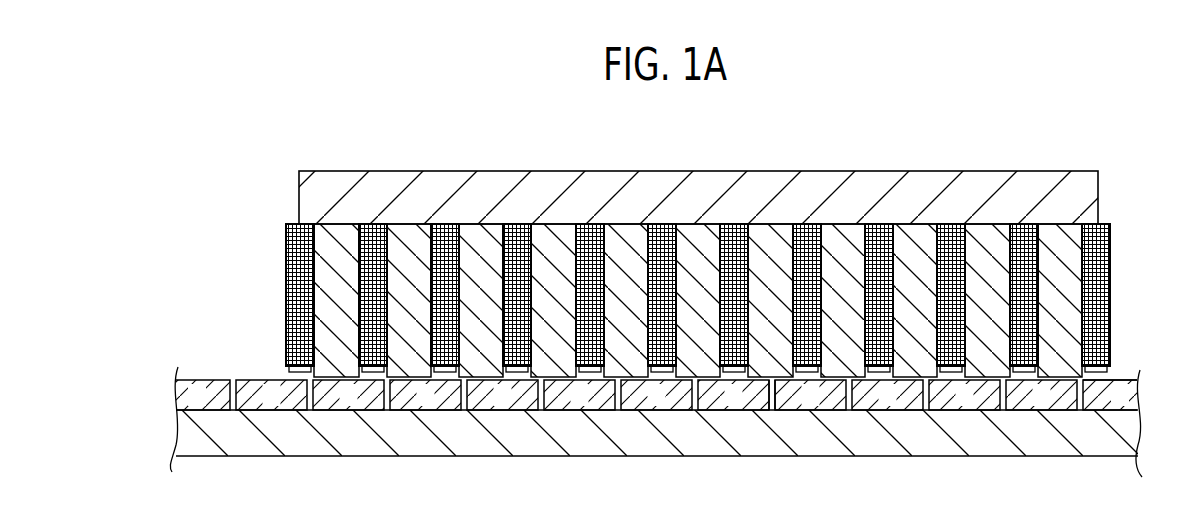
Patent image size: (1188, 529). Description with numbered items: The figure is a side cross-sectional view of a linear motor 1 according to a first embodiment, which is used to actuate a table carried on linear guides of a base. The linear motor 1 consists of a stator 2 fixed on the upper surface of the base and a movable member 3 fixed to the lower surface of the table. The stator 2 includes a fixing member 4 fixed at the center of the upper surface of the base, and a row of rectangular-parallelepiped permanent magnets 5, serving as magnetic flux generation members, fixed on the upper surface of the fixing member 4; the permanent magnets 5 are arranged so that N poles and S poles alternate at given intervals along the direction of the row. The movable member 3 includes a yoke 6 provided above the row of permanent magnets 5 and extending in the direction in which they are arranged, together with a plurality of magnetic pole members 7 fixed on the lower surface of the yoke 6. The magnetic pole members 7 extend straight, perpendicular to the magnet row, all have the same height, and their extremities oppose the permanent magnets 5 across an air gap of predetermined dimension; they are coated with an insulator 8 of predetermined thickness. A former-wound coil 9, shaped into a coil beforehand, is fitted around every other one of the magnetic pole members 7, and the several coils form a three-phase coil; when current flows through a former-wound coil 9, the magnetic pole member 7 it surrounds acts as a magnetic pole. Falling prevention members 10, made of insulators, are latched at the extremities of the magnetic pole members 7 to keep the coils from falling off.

The linear motor 1 is at (698, 230).
The stator 2 is at (674, 413).
The movable member 3 is at (698, 239).
The fixing member 4 is at (387, 443).
The permanent magnets 5 is at (260, 379).
The yoke 6 is at (368, 180).
The magnetic pole members 7 is at (705, 240).
The insulator 8 is at (780, 370).
The former-wound coil 9 is at (668, 228).
The falling prevention members 10 is at (1126, 378).